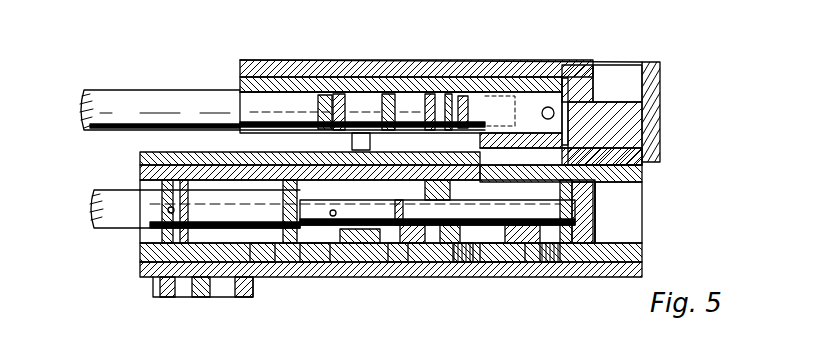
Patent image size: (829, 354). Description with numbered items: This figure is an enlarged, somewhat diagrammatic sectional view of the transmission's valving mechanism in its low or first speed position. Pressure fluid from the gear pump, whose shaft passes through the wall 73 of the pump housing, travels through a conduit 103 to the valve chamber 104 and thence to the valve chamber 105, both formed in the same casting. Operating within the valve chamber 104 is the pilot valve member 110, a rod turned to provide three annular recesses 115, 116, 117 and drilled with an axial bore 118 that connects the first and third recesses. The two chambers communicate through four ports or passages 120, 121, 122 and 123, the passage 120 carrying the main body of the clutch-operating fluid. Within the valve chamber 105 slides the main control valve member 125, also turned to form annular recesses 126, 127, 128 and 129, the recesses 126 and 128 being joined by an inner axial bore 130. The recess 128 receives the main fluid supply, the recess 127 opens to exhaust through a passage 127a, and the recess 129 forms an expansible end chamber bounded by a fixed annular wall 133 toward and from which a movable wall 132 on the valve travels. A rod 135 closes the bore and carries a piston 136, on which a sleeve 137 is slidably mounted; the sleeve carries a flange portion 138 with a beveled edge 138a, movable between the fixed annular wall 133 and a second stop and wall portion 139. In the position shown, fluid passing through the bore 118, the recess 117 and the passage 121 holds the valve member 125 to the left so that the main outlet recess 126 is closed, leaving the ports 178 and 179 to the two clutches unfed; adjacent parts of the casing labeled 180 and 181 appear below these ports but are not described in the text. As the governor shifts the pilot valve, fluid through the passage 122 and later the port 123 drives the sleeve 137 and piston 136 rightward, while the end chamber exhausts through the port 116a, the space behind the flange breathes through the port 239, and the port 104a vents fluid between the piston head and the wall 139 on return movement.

The wall 73 is at (656, 80).
The conduit 103 is at (356, 70).
The valve chamber 104 is at (527, 97).
The port 104a is at (549, 92).
The valve chamber 105 is at (307, 173).
The valve member 110 is at (105, 118).
The annular recess 115 is at (340, 97).
The annular recess 116 is at (405, 96).
The port 116a is at (429, 78).
The annular recess 117 is at (443, 150).
The axial bore 118 is at (328, 110).
The passage 120 is at (360, 147).
The passage 121 is at (442, 170).
The passage 122 is at (447, 200).
The port 123 is at (540, 158).
The valve member 125 is at (207, 200).
The annular recess 126 is at (164, 238).
The annular recess 127 is at (257, 233).
The passage 127a is at (275, 253).
The annular recess 128 is at (343, 245).
The annular recess 129 is at (402, 237).
The axial bore 130 is at (312, 213).
The movable wall 132 is at (383, 230).
The fixed annular wall 133 is at (465, 245).
The rod 135 is at (593, 207).
The piston 136 is at (588, 208).
The sleeve 137 is at (572, 195).
The flange portion 138 is at (544, 117).
The beveled edge 138a is at (492, 253).
The stop and wall portion 139 is at (572, 235).
The port 178 is at (170, 266).
The port 179 is at (220, 253).
The bracket member 180 is at (197, 302).
The bracket member 181 is at (238, 300).
The port 239 is at (530, 267).